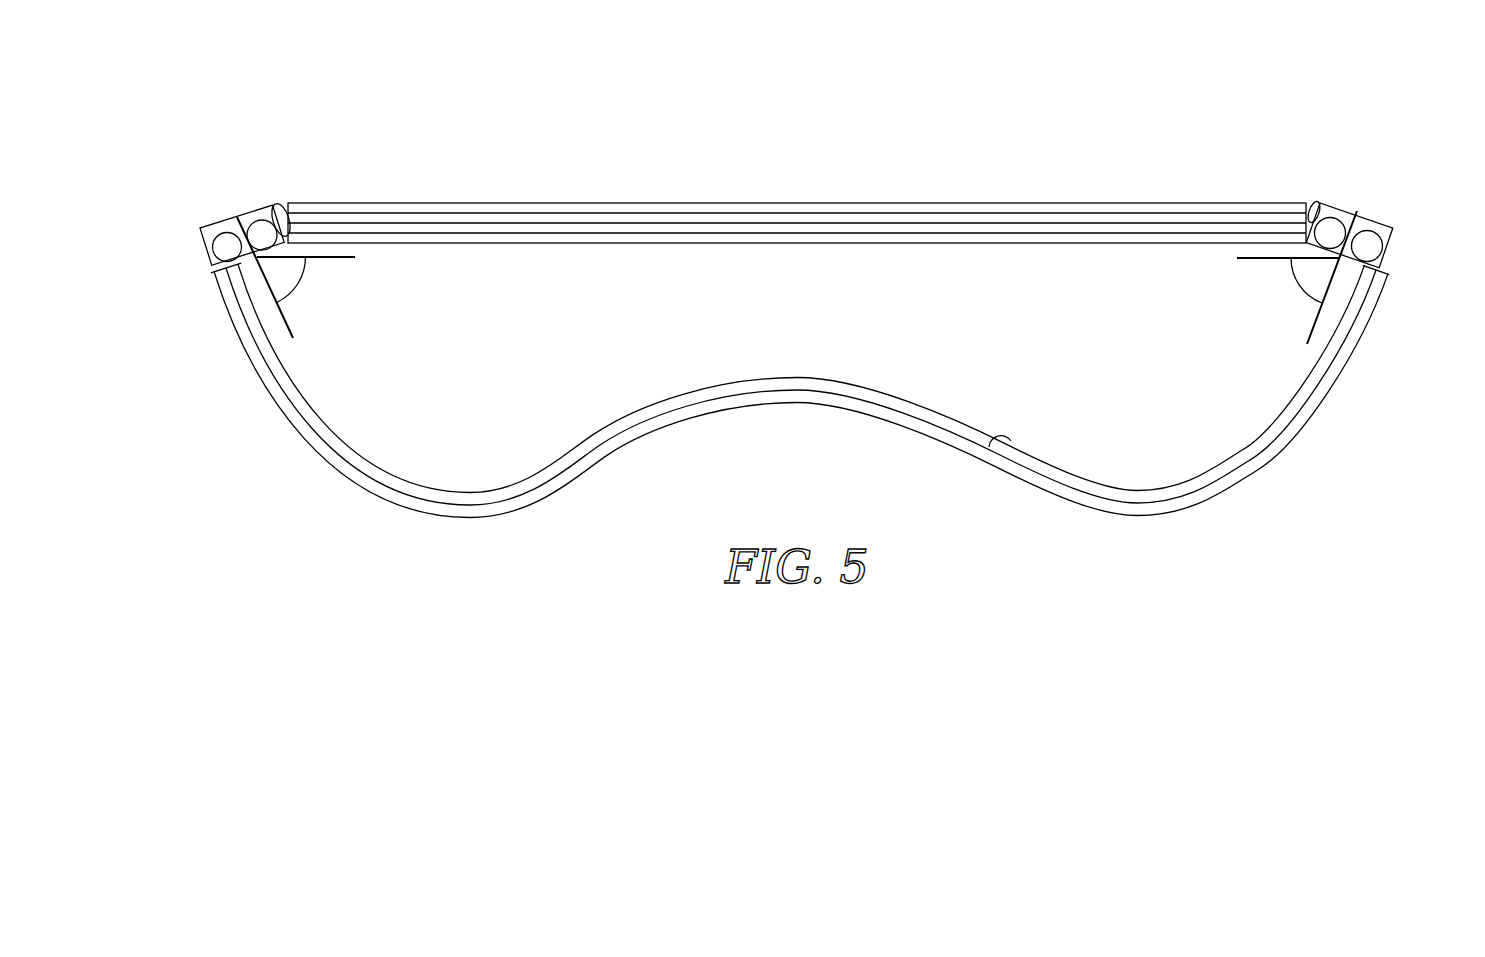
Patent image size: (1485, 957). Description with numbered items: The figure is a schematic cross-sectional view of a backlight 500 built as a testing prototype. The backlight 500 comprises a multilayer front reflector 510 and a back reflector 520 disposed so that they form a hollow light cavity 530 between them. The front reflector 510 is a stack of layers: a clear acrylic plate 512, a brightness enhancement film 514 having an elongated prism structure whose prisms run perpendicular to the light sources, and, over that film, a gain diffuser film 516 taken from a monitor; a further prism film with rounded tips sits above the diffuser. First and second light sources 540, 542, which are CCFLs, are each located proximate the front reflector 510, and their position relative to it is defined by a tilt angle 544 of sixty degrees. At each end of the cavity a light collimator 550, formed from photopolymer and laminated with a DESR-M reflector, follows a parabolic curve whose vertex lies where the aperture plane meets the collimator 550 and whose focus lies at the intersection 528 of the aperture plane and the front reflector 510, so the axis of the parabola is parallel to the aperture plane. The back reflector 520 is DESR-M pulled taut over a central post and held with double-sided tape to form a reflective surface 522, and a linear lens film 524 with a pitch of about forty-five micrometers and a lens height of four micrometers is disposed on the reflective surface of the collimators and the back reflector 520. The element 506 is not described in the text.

The backlight 500 is at (804, 337).
The hinge connector 506 is at (246, 258).
The front reflector 510 is at (1305, 197).
The clear plate 512 is at (268, 218).
The brightness enhancement film 514 is at (283, 205).
The gain diffuser film 516 is at (1318, 205).
The back reflector 520 is at (1126, 521).
The reflective surface 522 is at (1238, 486).
The linear lens film 524 is at (995, 435).
The intersection 528 is at (307, 247).
The hollow light cavity 530 is at (780, 330).
The first light source 540 is at (226, 211).
The second light source 542 is at (1371, 206).
The tilt angle 544 is at (298, 291).
The light collimator 550 is at (275, 411).